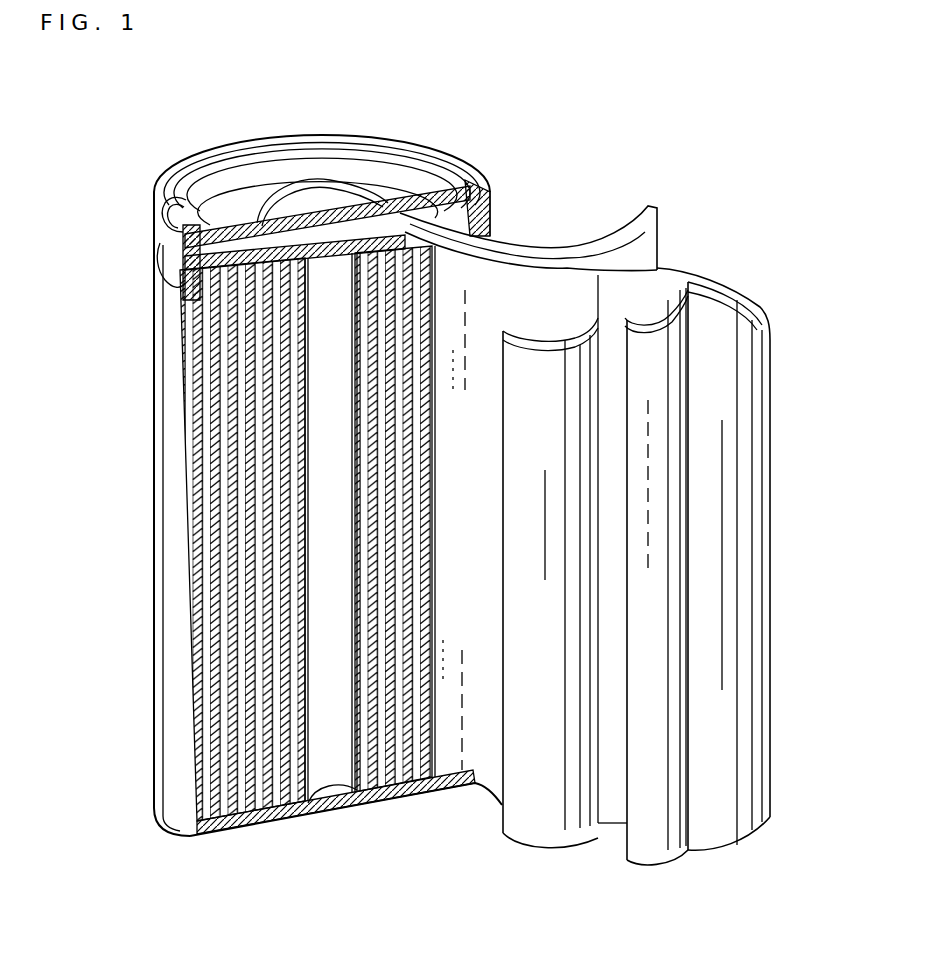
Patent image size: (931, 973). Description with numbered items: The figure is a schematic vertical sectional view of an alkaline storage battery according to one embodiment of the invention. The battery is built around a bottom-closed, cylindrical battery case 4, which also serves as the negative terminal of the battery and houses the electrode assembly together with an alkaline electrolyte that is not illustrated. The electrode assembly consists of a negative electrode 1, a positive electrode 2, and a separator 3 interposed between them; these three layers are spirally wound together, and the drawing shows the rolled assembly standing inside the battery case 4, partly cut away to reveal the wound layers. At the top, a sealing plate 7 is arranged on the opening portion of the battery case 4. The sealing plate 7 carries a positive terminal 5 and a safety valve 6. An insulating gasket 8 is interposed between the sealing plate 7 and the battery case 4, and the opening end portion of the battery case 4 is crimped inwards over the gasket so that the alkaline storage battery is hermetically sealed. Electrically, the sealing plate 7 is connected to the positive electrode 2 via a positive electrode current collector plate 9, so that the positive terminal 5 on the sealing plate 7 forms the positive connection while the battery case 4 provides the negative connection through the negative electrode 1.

The negative electrode 1 is at (753, 450).
The positive electrode 2 is at (577, 717).
The separator 3 is at (668, 574).
The battery case 4 is at (160, 578).
The positive terminal 5 is at (323, 185).
The safety valve 6 is at (300, 226).
The sealing plate 7 is at (440, 148).
The insulating gasket 8 is at (172, 220).
The positive electrode current collector plate 9 is at (180, 280).